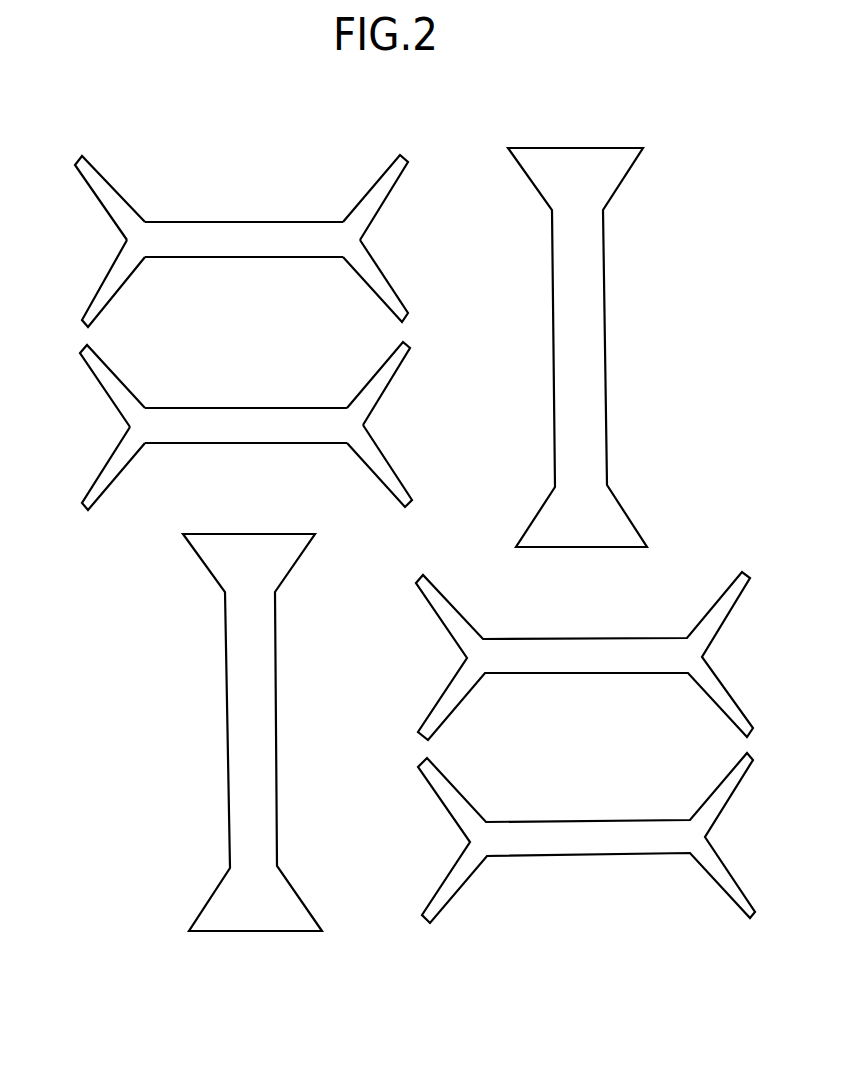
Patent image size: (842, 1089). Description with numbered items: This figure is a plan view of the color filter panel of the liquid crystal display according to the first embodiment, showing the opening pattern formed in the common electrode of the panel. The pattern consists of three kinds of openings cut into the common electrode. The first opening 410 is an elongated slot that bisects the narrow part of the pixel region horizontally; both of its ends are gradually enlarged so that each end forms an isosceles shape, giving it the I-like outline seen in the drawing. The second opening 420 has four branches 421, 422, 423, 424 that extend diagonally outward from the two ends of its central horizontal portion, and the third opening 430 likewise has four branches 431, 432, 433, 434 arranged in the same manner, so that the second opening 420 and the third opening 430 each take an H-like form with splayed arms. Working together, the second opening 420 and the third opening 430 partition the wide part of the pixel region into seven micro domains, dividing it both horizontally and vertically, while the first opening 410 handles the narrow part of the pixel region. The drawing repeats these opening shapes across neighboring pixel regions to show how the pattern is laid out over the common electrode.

The first opening 410 is at (277, 665).
The second opening 420 is at (232, 405).
The branch of the second opening 421 is at (383, 360).
The branch of the second opening 422 is at (398, 467).
The branch of the second opening 423 is at (100, 463).
The branch of the second opening 424 is at (110, 367).
The third opening 430 is at (225, 220).
The branch of the third opening 431 is at (378, 175).
The branch of the third opening 432 is at (393, 283).
The branch of the third opening 433 is at (98, 283).
The branch of the third opening 434 is at (108, 180).